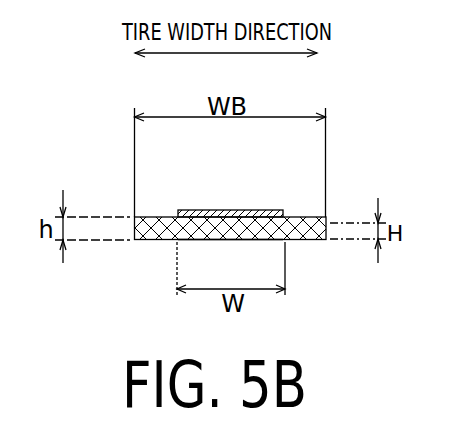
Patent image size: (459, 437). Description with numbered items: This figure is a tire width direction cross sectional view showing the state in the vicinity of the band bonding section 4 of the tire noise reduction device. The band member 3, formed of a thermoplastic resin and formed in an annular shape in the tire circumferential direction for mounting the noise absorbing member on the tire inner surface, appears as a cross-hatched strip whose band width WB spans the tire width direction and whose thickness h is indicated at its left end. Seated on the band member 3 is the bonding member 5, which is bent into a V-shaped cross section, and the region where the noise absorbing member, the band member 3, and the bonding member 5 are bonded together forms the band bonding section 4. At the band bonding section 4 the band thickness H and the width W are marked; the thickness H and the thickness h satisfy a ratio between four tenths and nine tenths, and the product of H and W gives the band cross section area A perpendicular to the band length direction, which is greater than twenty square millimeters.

The band member 3 is at (143, 240).
The band bonding section 4 is at (253, 228).
The bonding member 5 is at (222, 210).